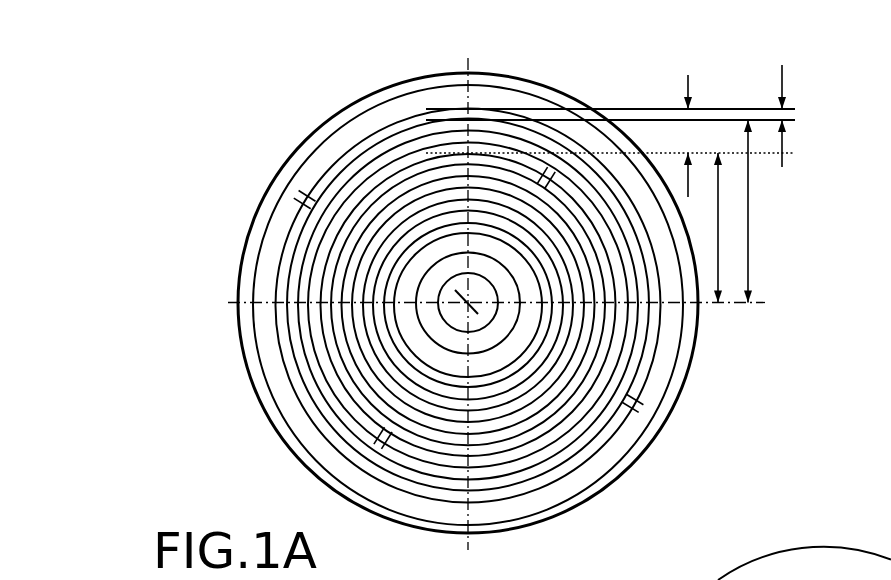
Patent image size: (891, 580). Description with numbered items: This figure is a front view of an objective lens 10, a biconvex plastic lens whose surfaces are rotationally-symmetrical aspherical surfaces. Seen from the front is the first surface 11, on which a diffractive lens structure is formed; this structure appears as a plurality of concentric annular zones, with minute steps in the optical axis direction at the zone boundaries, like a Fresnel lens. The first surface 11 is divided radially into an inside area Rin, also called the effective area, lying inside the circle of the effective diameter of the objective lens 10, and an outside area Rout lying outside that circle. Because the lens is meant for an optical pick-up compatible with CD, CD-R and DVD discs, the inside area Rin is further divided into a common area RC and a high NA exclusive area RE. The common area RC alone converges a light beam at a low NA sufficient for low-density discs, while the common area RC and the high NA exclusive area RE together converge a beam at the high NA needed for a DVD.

The objective lens 10 is at (238, 233).
The first surface 11 is at (283, 404).
The high NA exclusive area RE is at (687, 136).
The common area RC is at (718, 228).
The inside area Rin is at (749, 211).
The outside area Rout is at (782, 113).